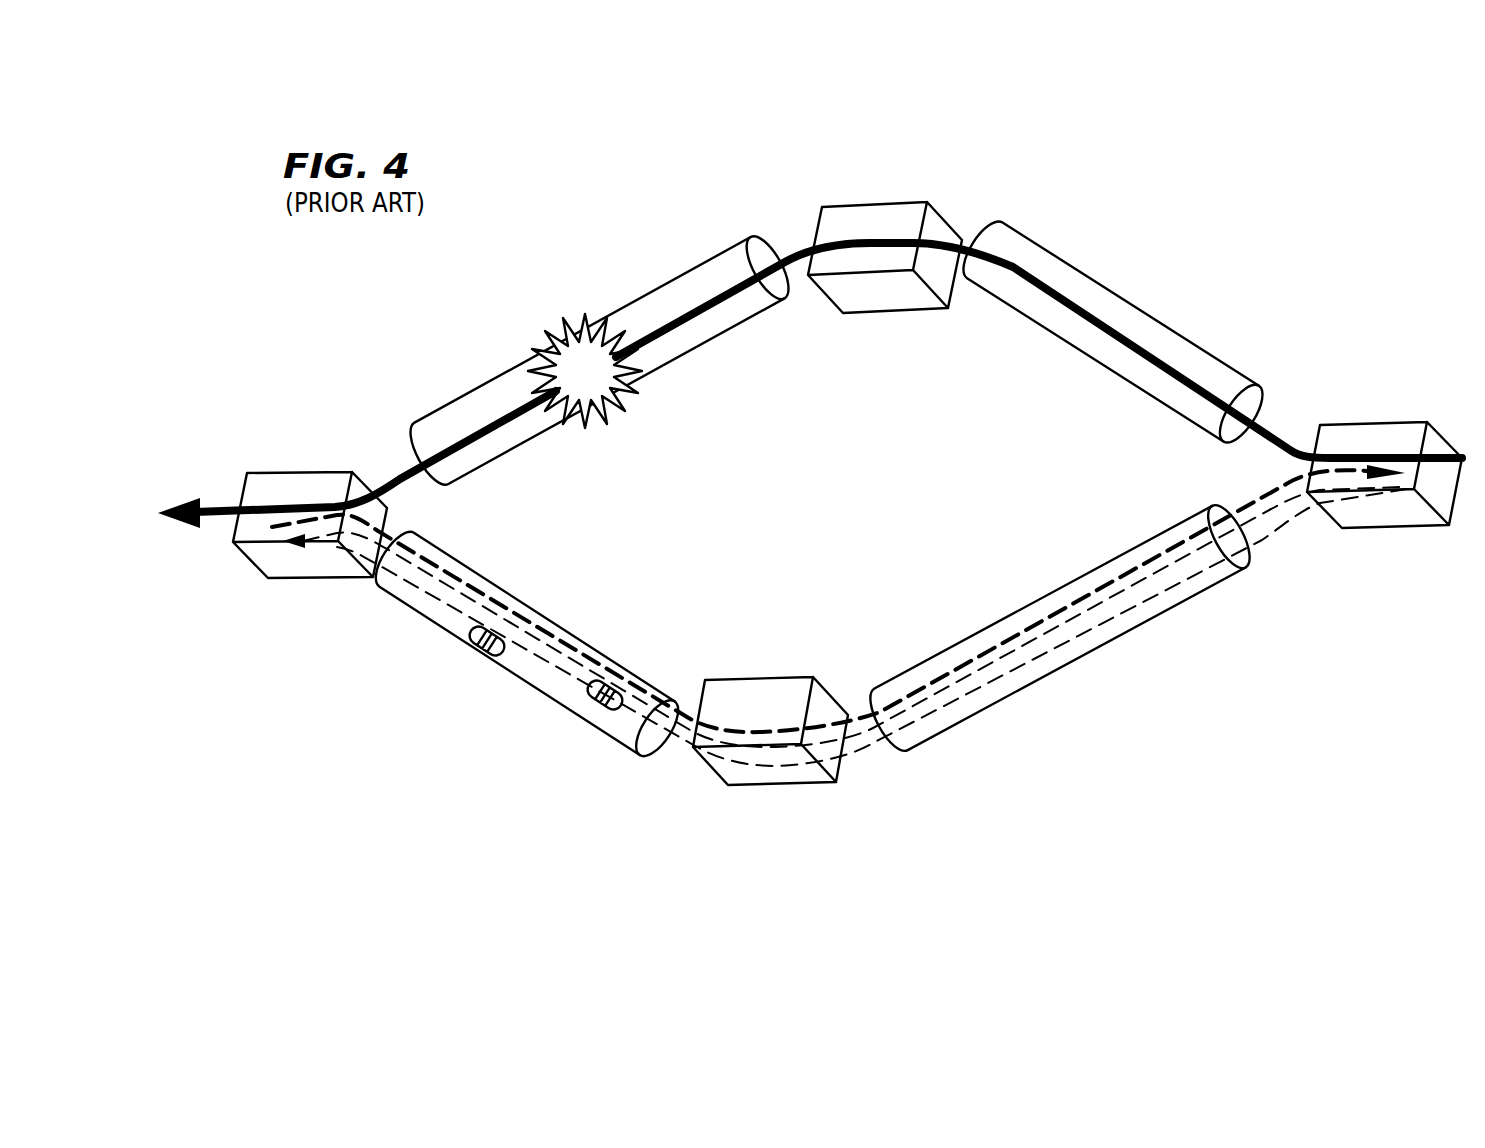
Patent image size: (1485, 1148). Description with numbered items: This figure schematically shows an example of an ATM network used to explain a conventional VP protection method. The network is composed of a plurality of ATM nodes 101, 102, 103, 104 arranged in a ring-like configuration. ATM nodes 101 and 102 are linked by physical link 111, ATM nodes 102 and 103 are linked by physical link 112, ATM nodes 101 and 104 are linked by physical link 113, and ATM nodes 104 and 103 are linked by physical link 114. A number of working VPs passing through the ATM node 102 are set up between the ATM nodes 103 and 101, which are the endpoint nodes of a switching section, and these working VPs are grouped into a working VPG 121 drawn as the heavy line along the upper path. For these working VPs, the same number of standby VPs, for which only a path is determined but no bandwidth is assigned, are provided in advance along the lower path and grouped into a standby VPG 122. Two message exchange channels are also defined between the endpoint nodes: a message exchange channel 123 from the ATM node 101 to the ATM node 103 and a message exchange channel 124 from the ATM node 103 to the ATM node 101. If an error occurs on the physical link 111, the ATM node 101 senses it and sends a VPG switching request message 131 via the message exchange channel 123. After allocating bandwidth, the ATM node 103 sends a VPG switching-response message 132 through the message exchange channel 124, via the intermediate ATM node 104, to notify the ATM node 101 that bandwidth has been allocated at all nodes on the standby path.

The ATM node 101 is at (294, 472).
The ATM node 102 is at (860, 204).
The ATM node 103 is at (1373, 423).
The ATM node 104 is at (759, 680).
The physical link 111 is at (650, 290).
The physical link 112 is at (1092, 275).
The physical link 113 is at (499, 584).
The physical link 114 is at (1047, 592).
The working VPG 121 is at (1178, 368).
The standby VPG 122 is at (576, 646).
The message exchange channel 123 is at (1148, 578).
The message exchange channel 124 is at (1032, 662).
The VPG switching request message 131 is at (592, 698).
The VPG switching-response message 132 is at (480, 648).